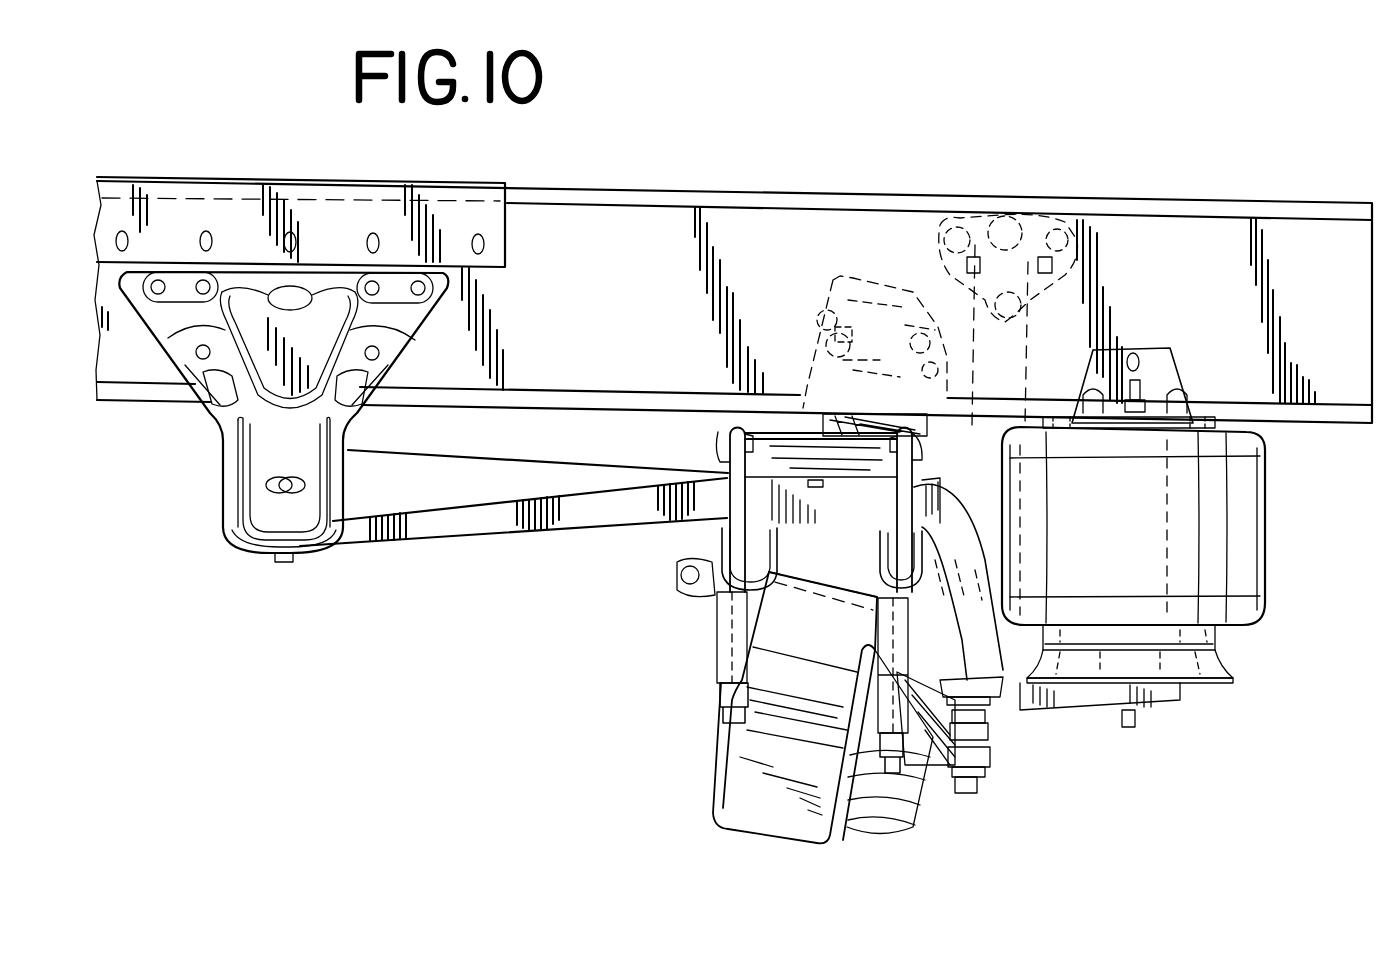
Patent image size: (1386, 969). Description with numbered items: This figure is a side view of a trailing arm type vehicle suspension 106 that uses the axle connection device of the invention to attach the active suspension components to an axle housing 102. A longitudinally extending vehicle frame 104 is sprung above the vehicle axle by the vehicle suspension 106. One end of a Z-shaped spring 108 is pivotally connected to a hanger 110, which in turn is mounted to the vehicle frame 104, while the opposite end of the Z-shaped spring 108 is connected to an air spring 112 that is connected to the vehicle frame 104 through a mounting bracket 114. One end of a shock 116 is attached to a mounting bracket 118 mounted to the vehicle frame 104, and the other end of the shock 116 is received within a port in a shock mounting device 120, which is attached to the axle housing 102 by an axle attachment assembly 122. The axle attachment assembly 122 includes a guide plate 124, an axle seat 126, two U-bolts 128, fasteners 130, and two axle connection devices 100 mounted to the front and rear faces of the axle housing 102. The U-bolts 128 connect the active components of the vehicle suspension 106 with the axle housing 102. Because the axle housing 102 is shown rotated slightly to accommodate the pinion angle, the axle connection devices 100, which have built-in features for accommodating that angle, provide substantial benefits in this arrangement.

The axle connection device 100 is at (713, 610).
The axle housing 102 is at (772, 668).
The vehicle frame 104 is at (570, 225).
The vehicle suspension 106 is at (488, 652).
The Z-shaped spring 108 is at (433, 518).
The hanger 110 is at (258, 446).
The air spring 112 is at (1240, 520).
The mounting bracket 114 is at (1165, 362).
The shock 116 is at (1017, 338).
The mounting bracket 118 is at (1068, 217).
The shock mounting device 120 is at (990, 768).
The axle attachment assembly 122 is at (712, 450).
The guide plate 124 is at (778, 440).
The axle seat 126 is at (702, 555).
The U-bolts 128 is at (733, 428).
The fasteners 130 is at (705, 690).